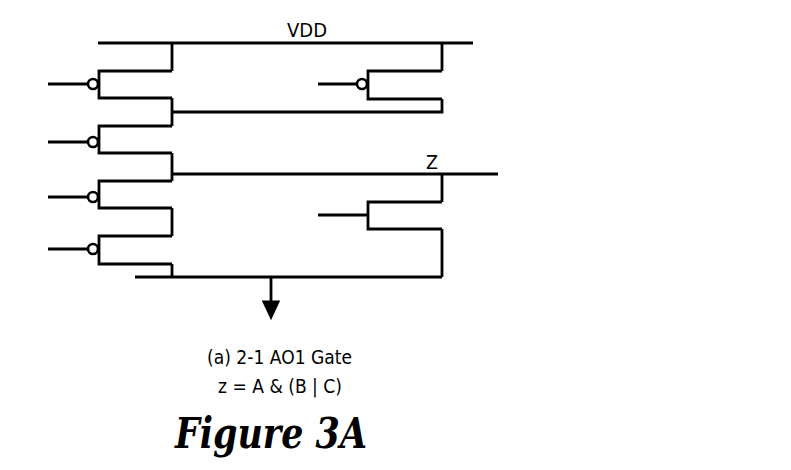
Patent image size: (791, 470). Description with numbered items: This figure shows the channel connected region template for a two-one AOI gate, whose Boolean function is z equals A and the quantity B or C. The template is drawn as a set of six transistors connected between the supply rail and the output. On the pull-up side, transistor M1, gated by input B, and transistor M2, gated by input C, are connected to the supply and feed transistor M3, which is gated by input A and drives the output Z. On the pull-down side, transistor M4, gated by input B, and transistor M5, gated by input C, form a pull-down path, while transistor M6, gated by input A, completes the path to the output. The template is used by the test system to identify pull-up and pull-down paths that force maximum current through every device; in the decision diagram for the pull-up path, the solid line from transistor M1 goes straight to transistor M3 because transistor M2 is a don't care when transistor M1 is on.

The transistor M1 is at (110, 79).
The transistor M2 is at (380, 80).
The transistor M3 is at (110, 135).
The transistor M4 is at (110, 190).
The transistor M5 is at (110, 244).
The transistor M6 is at (380, 210).